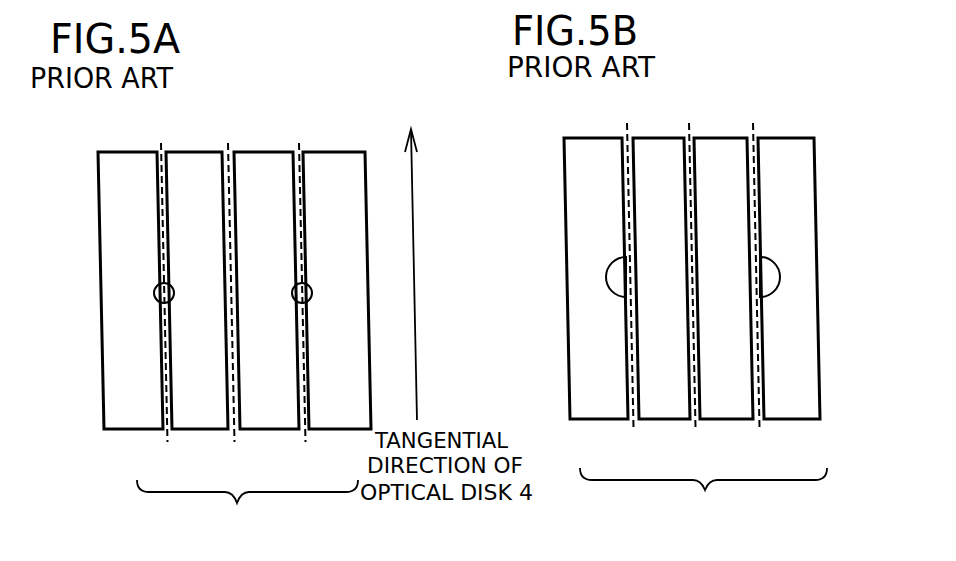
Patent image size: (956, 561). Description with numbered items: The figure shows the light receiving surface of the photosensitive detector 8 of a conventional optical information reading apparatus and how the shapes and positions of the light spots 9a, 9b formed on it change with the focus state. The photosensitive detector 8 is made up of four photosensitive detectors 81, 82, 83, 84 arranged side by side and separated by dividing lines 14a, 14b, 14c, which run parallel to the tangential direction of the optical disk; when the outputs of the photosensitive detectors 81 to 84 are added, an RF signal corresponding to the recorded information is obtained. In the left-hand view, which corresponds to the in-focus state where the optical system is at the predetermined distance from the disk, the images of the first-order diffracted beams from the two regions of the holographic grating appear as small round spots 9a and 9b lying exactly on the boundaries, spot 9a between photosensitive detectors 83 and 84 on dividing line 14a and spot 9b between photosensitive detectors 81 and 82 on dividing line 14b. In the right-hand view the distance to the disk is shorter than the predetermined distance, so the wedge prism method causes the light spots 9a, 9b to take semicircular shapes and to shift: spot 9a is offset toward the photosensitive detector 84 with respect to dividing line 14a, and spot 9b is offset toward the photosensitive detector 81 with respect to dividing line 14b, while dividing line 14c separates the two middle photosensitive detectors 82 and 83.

In FIG. 5A, the photosensitive detector 8 is at (247, 509).
In FIG. 5B, the photosensitive detector 8 is at (703, 498).
In FIG. 5A, the photosensitive detector 81 is at (142, 415).
In FIG. 5B, the photosensitive detector 81 is at (598, 398).
In FIG. 5A, the photosensitive detector 82 is at (197, 415).
In FIG. 5B, the photosensitive detector 82 is at (667, 402).
In FIG. 5A, the photosensitive detector 83 is at (262, 410).
In FIG. 5B, the photosensitive detector 83 is at (727, 400).
In FIG. 5A, the photosensitive detector 84 is at (335, 410).
In FIG. 5B, the photosensitive detector 84 is at (790, 400).
In FIG. 5A, the light spot 9a is at (328, 293).
In FIG. 5B, the light spot 9a is at (792, 274).
In FIG. 5A, the light spot 9b is at (140, 300).
In FIG. 5B, the light spot 9b is at (608, 282).
In FIG. 5A, the dividing line 14a is at (302, 277).
In FIG. 5B, the dividing line 14a is at (757, 259).
In FIG. 5A, the dividing line 14b is at (171, 277).
In FIG. 5B, the dividing line 14b is at (633, 259).
In FIG. 5A, the dividing line 14c is at (233, 277).
In FIG. 5B, the dividing line 14c is at (693, 259).